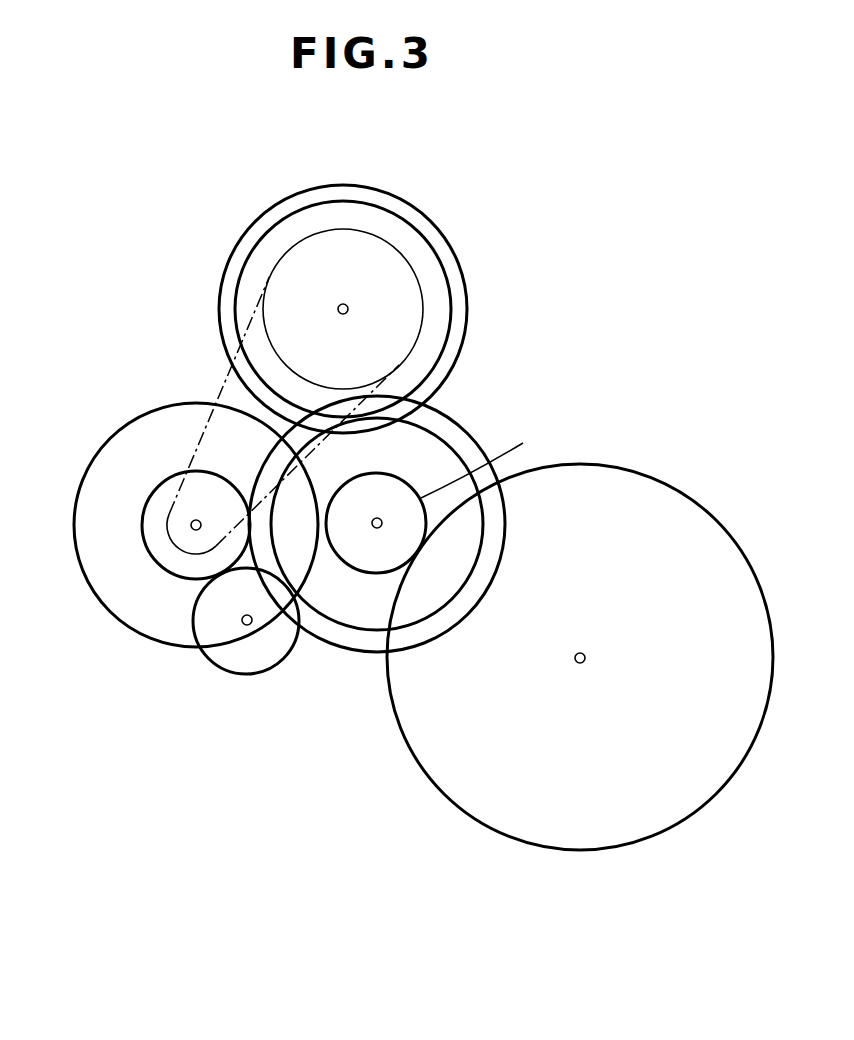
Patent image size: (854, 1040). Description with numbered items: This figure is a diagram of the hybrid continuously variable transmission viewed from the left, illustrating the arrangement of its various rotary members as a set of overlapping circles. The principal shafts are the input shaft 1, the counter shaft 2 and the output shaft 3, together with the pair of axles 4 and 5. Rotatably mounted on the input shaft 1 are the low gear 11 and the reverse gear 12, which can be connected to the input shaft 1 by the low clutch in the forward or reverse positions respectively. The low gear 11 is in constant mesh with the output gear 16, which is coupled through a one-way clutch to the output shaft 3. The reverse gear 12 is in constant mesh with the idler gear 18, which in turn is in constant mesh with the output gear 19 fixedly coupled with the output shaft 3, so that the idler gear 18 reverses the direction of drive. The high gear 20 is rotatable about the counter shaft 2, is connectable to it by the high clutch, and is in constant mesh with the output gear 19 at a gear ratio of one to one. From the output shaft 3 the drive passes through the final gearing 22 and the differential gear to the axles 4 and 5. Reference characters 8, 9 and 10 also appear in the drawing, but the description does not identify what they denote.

The input shaft 1 is at (192, 538).
The counter shaft 2 is at (349, 309).
The output shaft 3 is at (381, 519).
The axle 4 is at (578, 663).
The axle 5 is at (580, 658).
The large gear 8 is at (121, 426).
The drive gear 9 is at (343, 185).
The belt 10 is at (222, 386).
The low gear 11 is at (148, 549).
The reverse gear 12 is at (191, 534).
The output gear 16 is at (365, 654).
The idler gear 18 is at (248, 675).
The output gear 19 is at (328, 626).
The high gear 20 is at (449, 343).
The final gearing 22 is at (523, 472).